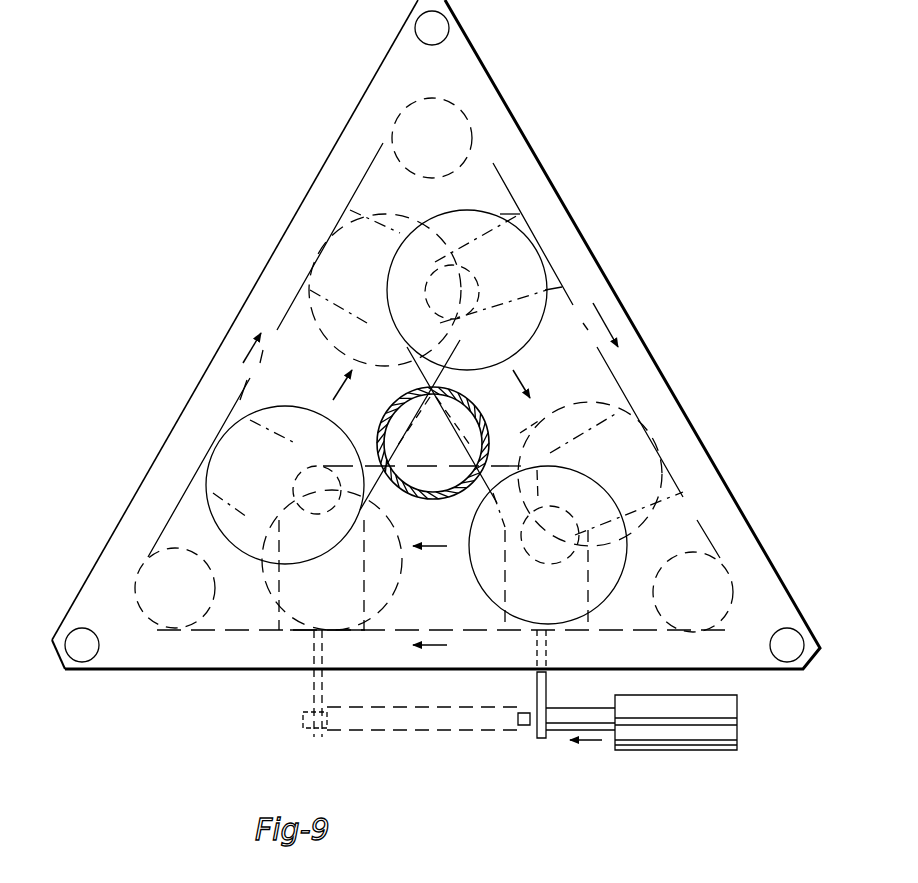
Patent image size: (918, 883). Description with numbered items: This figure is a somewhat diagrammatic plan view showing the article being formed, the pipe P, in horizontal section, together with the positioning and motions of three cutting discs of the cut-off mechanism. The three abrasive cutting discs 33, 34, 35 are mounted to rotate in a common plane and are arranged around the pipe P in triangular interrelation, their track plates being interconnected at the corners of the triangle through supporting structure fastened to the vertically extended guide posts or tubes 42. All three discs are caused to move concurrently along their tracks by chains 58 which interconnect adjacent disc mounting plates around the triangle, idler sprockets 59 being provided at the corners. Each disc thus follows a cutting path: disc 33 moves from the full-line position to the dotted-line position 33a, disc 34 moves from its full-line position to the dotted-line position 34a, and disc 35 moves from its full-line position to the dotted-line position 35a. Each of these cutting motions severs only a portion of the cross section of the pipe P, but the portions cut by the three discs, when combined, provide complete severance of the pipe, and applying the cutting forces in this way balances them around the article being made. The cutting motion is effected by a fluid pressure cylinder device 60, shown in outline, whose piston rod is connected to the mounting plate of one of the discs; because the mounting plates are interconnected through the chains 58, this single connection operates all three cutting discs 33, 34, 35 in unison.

The guide posts or tubes 42 is at (450, 32).
The idler sprockets 59 is at (442, 97).
The chains 58 is at (173, 505).
The cutting disc 33 is at (318, 406).
The cutting disc 34 is at (487, 213).
The cutting disc 35 is at (612, 590).
The dotted-line position of disc 33 33a is at (368, 213).
The dotted-line position of disc 34 34a is at (558, 410).
The dotted-line position of disc 35 35a is at (400, 566).
The pipe P is at (397, 422).
The fluid pressure cylinder device 60 is at (700, 750).